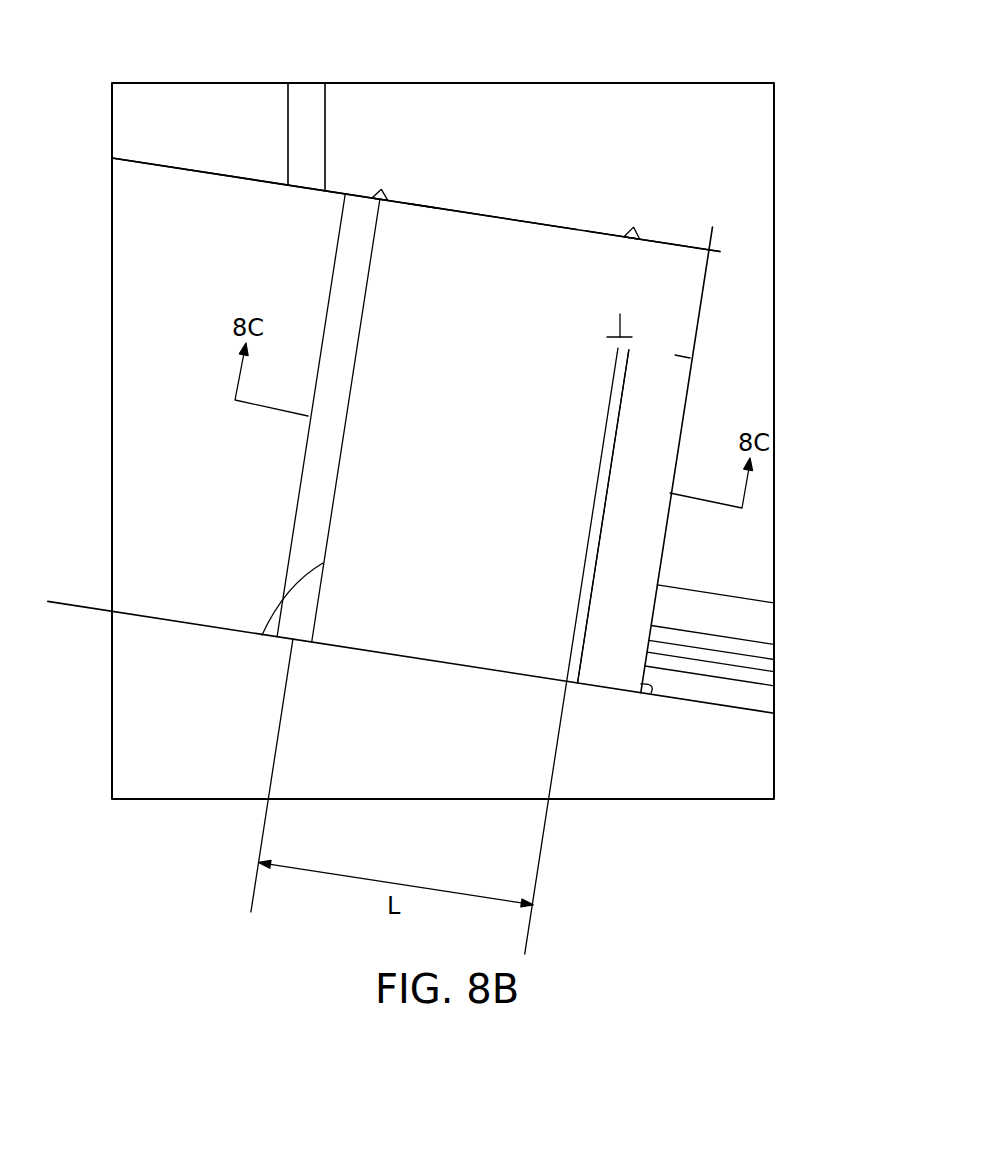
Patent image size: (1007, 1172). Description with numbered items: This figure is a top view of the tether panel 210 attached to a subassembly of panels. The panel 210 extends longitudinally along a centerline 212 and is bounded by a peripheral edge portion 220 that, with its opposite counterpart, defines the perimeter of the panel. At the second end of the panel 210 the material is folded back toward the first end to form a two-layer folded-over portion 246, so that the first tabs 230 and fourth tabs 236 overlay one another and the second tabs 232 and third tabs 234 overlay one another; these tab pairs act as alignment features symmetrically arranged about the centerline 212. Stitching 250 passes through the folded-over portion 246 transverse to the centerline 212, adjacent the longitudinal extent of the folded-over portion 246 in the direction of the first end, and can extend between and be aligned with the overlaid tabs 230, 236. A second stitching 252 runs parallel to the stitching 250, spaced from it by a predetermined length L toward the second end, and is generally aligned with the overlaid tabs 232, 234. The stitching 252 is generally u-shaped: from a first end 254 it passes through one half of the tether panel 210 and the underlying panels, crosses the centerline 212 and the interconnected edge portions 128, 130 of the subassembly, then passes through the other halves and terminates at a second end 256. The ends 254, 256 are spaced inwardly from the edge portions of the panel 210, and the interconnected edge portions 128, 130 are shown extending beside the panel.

The panel 210 is at (736, 231).
The peripheral edge portion 220 is at (200, 172).
The folded-over portion 246 is at (484, 205).
The first tabs 230 is at (348, 337).
The fourth tabs 236 is at (381, 186).
The second tabs 232 is at (629, 141).
The third tabs 234 is at (633, 224).
The centerline 212 is at (62, 603).
The stitching 250 is at (262, 635).
The first end 254 is at (606, 353).
The second end 256 is at (642, 366).
The stitching 252 is at (612, 471).
The interconnected edge portion 128 is at (707, 672).
The interconnected edge portion 130 is at (690, 702).